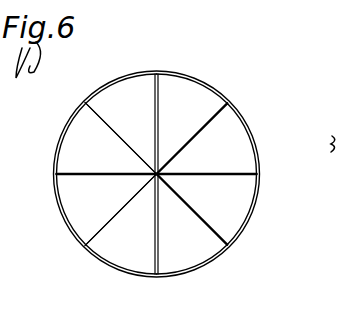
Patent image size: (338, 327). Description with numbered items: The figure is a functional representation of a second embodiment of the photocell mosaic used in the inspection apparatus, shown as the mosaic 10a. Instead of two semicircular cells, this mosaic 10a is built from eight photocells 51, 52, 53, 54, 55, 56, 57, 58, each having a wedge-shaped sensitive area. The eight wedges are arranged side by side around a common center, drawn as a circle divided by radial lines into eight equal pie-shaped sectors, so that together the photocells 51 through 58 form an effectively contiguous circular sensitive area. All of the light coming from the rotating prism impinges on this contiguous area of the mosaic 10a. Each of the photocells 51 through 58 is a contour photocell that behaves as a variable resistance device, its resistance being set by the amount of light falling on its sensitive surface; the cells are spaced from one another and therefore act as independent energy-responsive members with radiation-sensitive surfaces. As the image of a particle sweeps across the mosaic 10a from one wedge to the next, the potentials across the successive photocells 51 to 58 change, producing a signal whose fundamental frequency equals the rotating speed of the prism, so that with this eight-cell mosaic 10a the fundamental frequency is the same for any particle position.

The photocell mosaic 10a is at (268, 106).
The photocell 51 is at (190, 110).
The photocell 52 is at (222, 153).
The photocell 53 is at (220, 210).
The photocell 54 is at (185, 245).
The photocell 55 is at (135, 238).
The photocell 56 is at (103, 200).
The photocell 57 is at (100, 145).
The photocell 58 is at (127, 105).